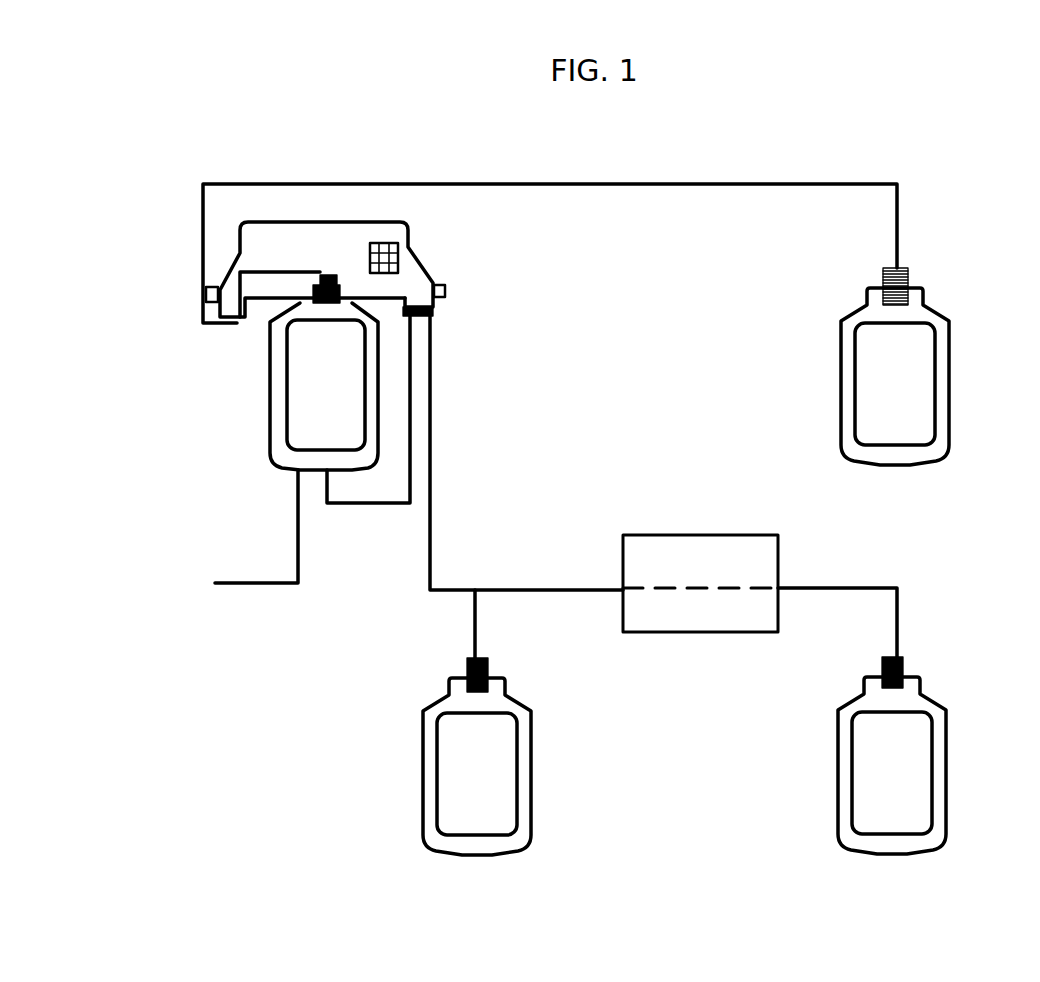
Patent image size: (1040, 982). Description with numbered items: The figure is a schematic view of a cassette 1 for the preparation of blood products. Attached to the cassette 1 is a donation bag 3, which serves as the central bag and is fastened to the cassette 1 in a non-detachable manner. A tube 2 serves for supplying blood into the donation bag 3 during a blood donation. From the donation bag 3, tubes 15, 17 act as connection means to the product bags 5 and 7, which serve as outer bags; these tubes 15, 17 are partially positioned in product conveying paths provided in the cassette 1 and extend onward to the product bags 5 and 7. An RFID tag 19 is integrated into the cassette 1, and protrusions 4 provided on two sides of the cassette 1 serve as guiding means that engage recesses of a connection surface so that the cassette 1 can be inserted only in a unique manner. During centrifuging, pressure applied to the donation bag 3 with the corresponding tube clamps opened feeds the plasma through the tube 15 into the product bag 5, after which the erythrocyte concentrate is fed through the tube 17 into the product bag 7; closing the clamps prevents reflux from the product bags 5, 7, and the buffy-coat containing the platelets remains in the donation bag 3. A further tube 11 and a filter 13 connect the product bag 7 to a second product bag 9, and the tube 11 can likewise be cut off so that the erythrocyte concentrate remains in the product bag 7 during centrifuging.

The cassette 1 is at (320, 247).
The tube 2 is at (250, 585).
The donation bag 3 is at (323, 383).
The protrusions 4 is at (206, 295).
The product bag 5 is at (920, 397).
The product bag 7 is at (498, 780).
The second product bag 9 is at (912, 760).
The further tube 11 is at (848, 587).
The filter 13 is at (700, 560).
The tube 15 is at (745, 184).
The tube 17 is at (430, 452).
The RFID tag 19 is at (398, 256).